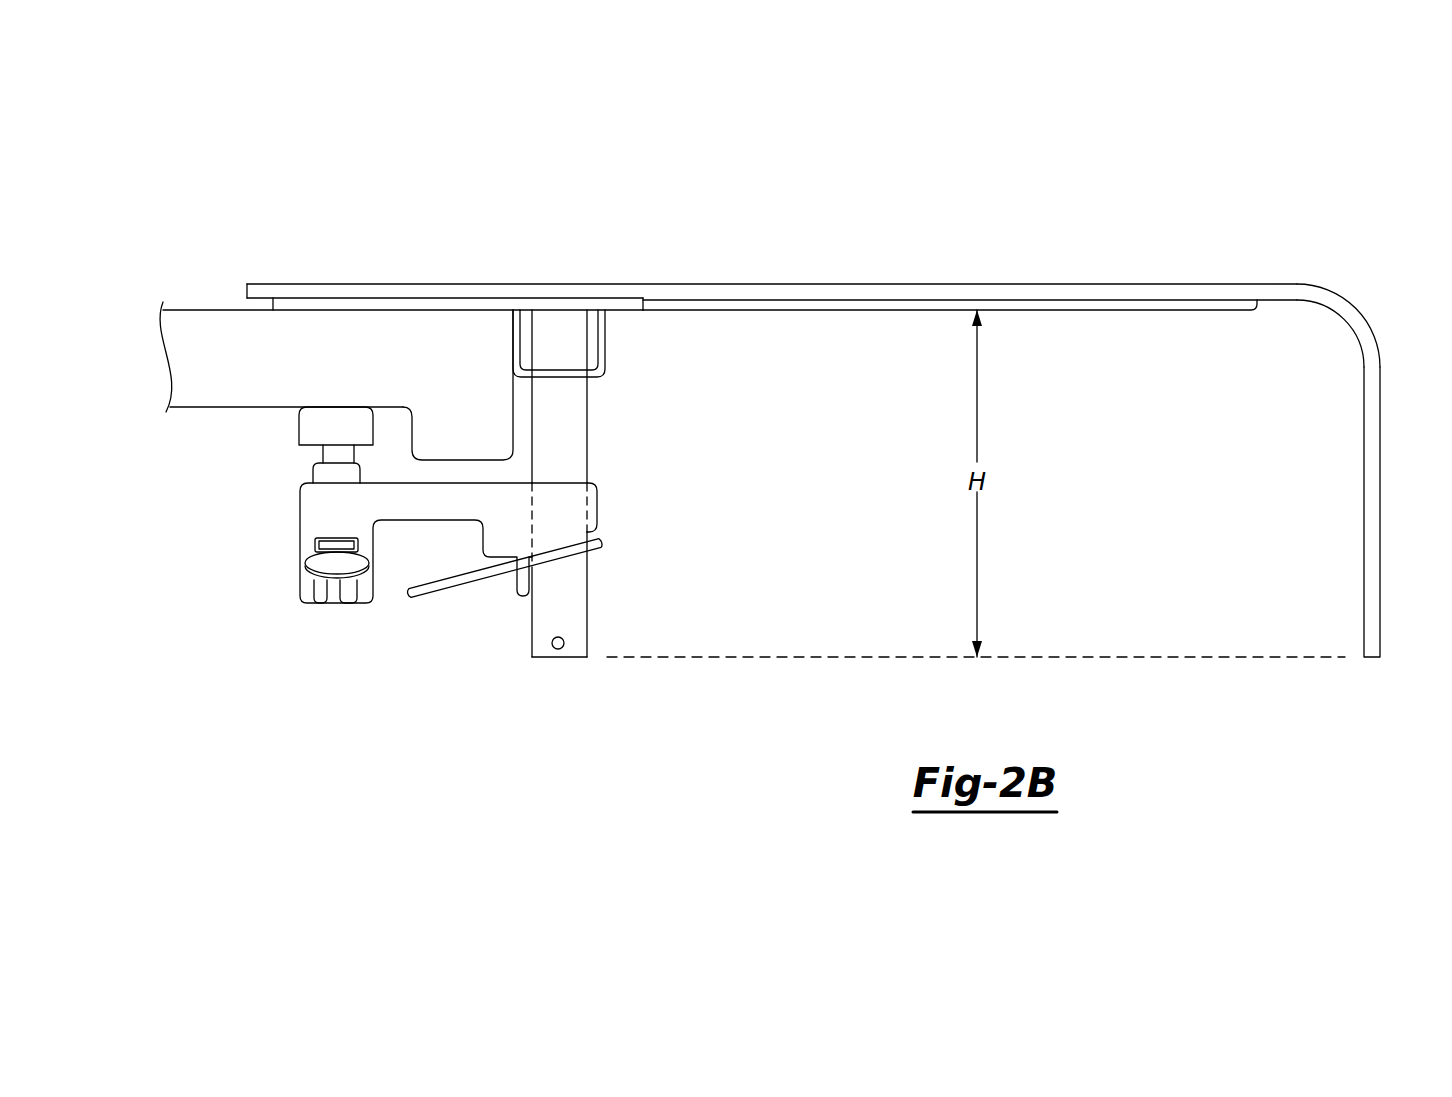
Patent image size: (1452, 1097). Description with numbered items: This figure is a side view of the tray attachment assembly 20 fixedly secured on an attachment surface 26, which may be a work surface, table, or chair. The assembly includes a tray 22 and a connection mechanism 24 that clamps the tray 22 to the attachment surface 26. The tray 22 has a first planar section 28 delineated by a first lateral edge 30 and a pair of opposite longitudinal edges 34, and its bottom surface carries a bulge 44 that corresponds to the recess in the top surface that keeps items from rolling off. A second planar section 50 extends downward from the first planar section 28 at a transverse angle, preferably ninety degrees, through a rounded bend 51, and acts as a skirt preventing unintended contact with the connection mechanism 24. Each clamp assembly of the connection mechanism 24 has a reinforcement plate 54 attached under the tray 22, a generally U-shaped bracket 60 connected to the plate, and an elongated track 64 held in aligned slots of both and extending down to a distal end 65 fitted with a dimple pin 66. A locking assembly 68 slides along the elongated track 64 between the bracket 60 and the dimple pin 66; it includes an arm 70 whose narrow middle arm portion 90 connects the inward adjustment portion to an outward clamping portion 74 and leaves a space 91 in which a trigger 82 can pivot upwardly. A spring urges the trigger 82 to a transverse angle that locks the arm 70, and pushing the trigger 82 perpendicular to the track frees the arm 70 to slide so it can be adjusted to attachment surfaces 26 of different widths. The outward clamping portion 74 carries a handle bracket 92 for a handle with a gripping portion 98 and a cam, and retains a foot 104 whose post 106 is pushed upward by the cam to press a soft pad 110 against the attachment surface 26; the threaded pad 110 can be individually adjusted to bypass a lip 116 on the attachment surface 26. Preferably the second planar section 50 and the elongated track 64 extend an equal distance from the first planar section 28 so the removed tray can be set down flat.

The tray attachment assembly 20 is at (502, 142).
The tray 22 is at (712, 284).
The connection mechanism 24 is at (654, 573).
The attachment surface 26 is at (185, 332).
The first planar section 28 is at (829, 291).
The first lateral edge 30 is at (257, 292).
The longitudinal edges 34 is at (936, 286).
The bulge 44 is at (1210, 310).
The second planar section 50 is at (1380, 591).
The bend 51 is at (1345, 305).
The reinforcement plate 54 is at (353, 305).
The bracket 60 is at (603, 330).
The elongated track 64 is at (557, 404).
The distal end 65 is at (581, 655).
The dimple pin 66 is at (556, 648).
The locking assembly 68 is at (605, 500).
The arm 70 is at (565, 495).
The outward clamping portion 74 is at (316, 503).
The trigger 82 is at (440, 600).
The middle arm portion 90 is at (455, 505).
The space 91 is at (418, 564).
The handle bracket 92 is at (302, 590).
The gripping portion 98 is at (322, 565).
The foot 104 is at (330, 408).
The post 106 is at (322, 455).
The pad 110 is at (308, 427).
The lip 116 is at (483, 405).